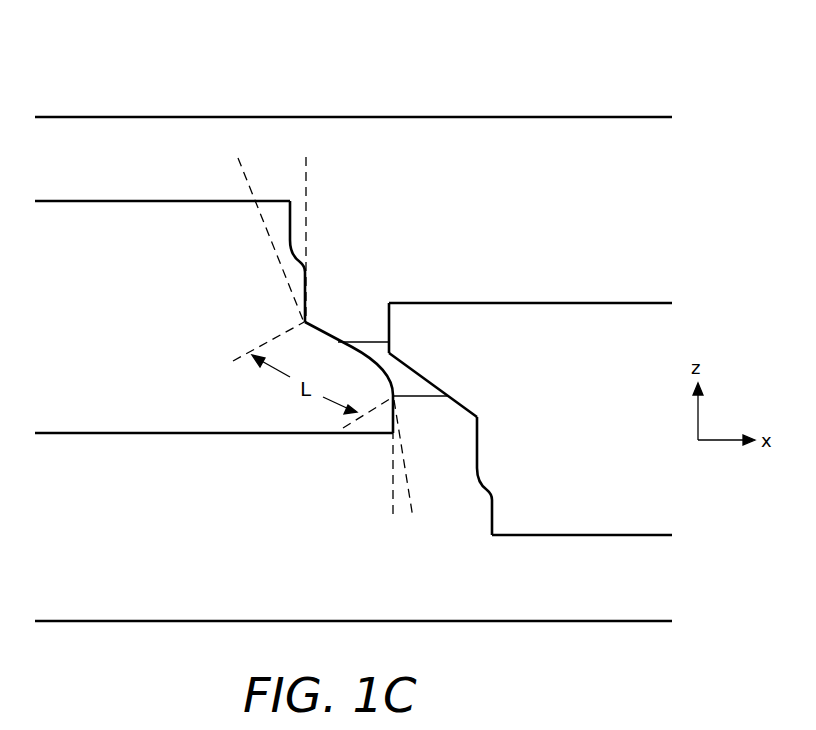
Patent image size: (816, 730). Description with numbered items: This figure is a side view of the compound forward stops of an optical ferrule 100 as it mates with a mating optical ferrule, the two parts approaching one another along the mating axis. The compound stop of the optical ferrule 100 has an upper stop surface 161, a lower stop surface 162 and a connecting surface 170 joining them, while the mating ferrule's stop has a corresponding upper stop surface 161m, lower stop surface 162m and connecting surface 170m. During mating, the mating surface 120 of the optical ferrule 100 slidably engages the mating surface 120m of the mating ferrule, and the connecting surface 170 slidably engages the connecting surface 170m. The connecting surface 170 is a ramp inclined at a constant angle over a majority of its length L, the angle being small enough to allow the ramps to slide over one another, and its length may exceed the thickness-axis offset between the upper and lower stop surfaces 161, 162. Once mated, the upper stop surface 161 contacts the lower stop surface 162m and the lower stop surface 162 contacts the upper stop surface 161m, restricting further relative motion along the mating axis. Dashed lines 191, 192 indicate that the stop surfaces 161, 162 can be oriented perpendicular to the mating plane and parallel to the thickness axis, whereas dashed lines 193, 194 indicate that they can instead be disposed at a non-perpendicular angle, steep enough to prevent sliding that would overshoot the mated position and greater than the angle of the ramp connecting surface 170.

The optical ferrule 100 is at (406, 116).
The dashed line 193 is at (248, 183).
The dashed line 191 is at (308, 182).
The upper stop surface 161 is at (306, 292).
The connecting surface 170 is at (328, 336).
The lower stop surface 162m is at (388, 320).
The mating surface 120m is at (392, 352).
The mating surface 120 is at (403, 392).
The connecting surface 170m is at (455, 407).
The lower stop surface 162 is at (395, 420).
The upper stop surface 161m is at (475, 467).
The dashed line 192 is at (393, 480).
The dashed line 194 is at (402, 458).